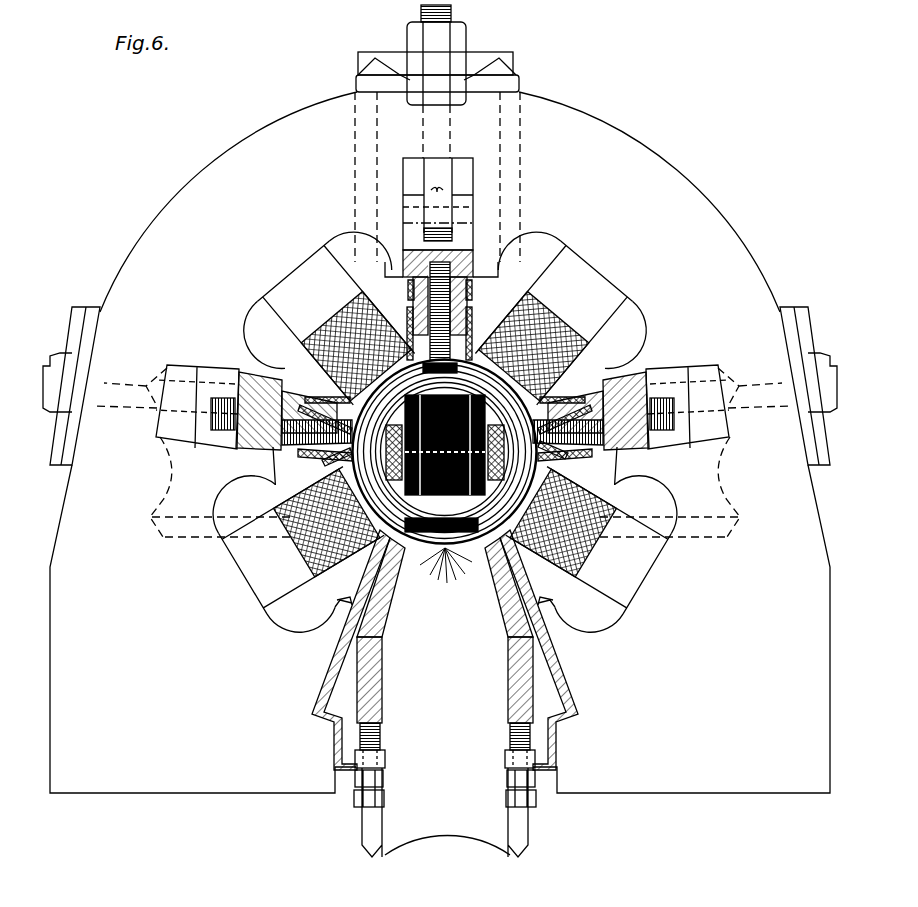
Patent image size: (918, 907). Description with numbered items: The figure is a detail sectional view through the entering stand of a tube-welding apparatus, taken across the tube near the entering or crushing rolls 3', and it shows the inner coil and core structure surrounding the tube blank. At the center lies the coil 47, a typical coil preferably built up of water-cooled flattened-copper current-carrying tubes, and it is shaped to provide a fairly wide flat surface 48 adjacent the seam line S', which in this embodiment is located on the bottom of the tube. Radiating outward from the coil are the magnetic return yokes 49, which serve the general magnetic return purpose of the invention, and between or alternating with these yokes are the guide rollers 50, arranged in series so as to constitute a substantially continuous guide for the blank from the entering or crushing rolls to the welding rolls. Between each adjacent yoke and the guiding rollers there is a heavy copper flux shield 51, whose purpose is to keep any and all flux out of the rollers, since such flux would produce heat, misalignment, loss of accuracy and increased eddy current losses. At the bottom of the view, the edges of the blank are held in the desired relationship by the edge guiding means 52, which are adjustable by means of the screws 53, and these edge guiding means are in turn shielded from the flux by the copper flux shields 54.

The entering or crushing rolls 3' is at (440, 495).
The coil 47 is at (588, 493).
The flat surface 48 is at (410, 545).
The magnetic return yokes 49 is at (576, 352).
The guide rollers 50 is at (410, 334).
The copper flux shield 51 is at (472, 340).
The edge guiding means 52 is at (512, 678).
The screws 53 is at (505, 790).
The copper flux shields 54 is at (372, 572).
The seam line s' is at (446, 594).